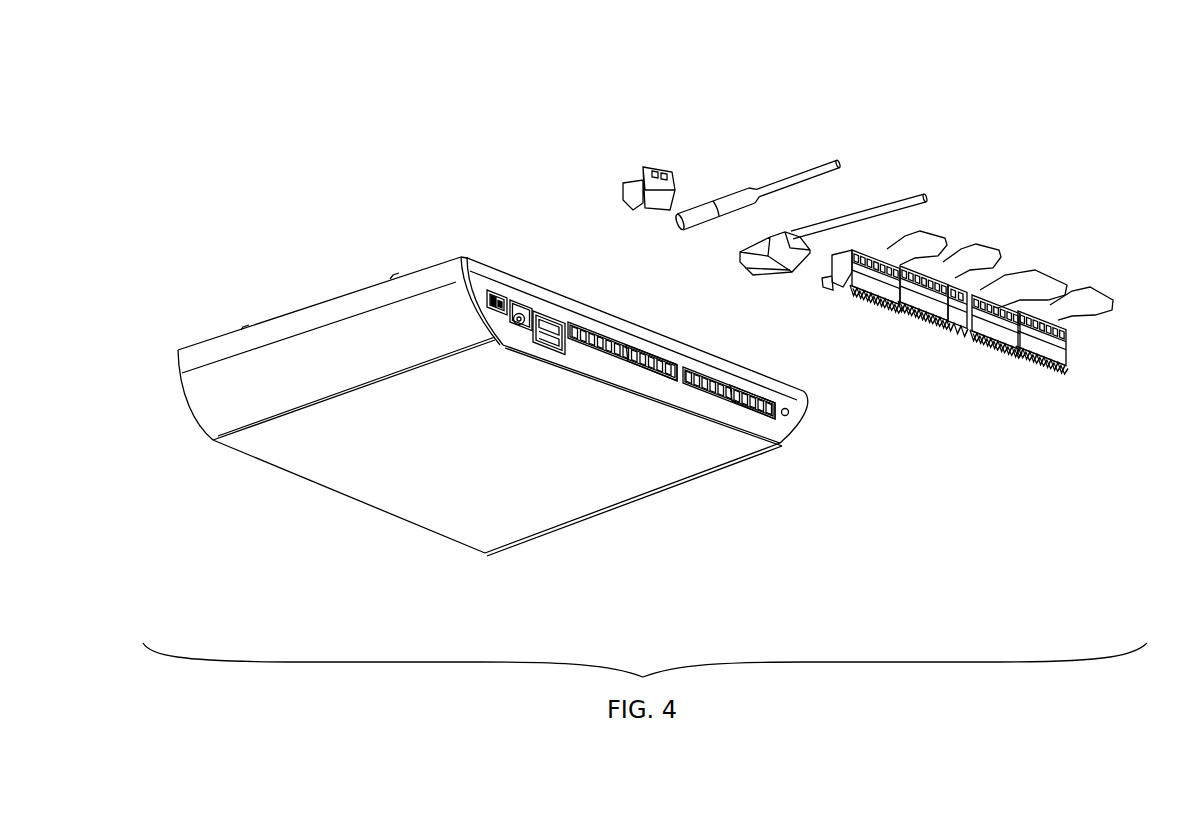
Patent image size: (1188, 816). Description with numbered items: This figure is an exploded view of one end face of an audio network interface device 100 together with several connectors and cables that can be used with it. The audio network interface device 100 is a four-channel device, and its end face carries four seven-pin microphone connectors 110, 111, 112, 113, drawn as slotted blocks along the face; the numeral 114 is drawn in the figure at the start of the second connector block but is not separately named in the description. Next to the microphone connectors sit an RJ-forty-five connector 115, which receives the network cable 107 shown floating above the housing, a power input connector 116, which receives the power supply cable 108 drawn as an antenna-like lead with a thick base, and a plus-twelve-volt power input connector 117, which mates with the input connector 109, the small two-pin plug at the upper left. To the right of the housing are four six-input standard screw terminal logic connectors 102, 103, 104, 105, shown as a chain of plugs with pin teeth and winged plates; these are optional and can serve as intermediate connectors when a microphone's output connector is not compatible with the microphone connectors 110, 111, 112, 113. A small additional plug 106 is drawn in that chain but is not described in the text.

The audio network interface device 100 is at (353, 482).
The screw terminal logic connector 102 is at (883, 287).
The screw terminal logic connector 103 is at (933, 307).
The screw terminal logic connector 104 is at (987, 352).
The screw terminal logic connector 105 is at (1037, 367).
The terminal block plug 106 is at (957, 330).
The network cable 107 is at (913, 203).
The power supply cable 108 is at (820, 167).
The input connector 109 is at (642, 167).
The microphone connector 110 is at (607, 340).
The microphone connector 111 is at (652, 355).
The microphone connector 112 is at (717, 380).
The microphone connector 113 is at (760, 397).
The terminal block connector 114 is at (683, 367).
The RJ-45 connector 115 is at (560, 323).
The power input connector 116 is at (530, 317).
The +12V power input connector 117 is at (498, 295).